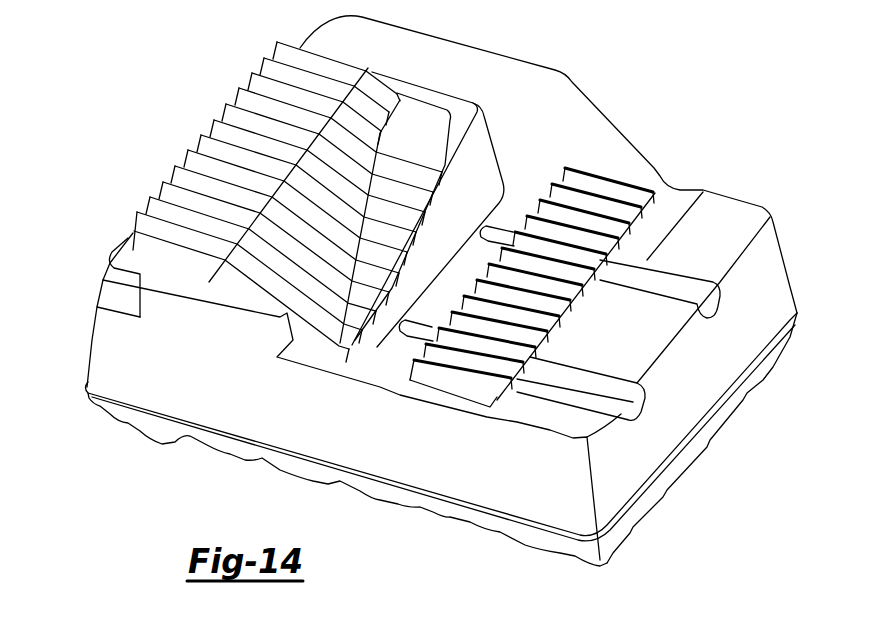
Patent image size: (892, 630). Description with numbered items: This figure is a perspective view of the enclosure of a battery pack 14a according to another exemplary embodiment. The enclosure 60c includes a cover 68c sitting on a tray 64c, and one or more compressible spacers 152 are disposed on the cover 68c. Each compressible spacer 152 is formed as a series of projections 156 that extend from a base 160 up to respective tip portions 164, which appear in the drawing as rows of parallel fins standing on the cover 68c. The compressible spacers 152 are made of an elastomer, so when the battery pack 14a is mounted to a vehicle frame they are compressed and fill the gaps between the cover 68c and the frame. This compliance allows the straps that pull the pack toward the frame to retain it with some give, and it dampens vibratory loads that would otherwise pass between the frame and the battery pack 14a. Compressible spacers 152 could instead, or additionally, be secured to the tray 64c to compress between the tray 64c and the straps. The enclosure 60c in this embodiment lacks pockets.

The battery pack 14a is at (678, 88).
The enclosure 60c is at (700, 162).
The tray 64c is at (613, 553).
The cover 68c is at (670, 384).
The compressible spacers 152 is at (322, 333).
The projections 156 is at (252, 268).
The base 160 is at (158, 252).
The tip portions 164 is at (220, 157).